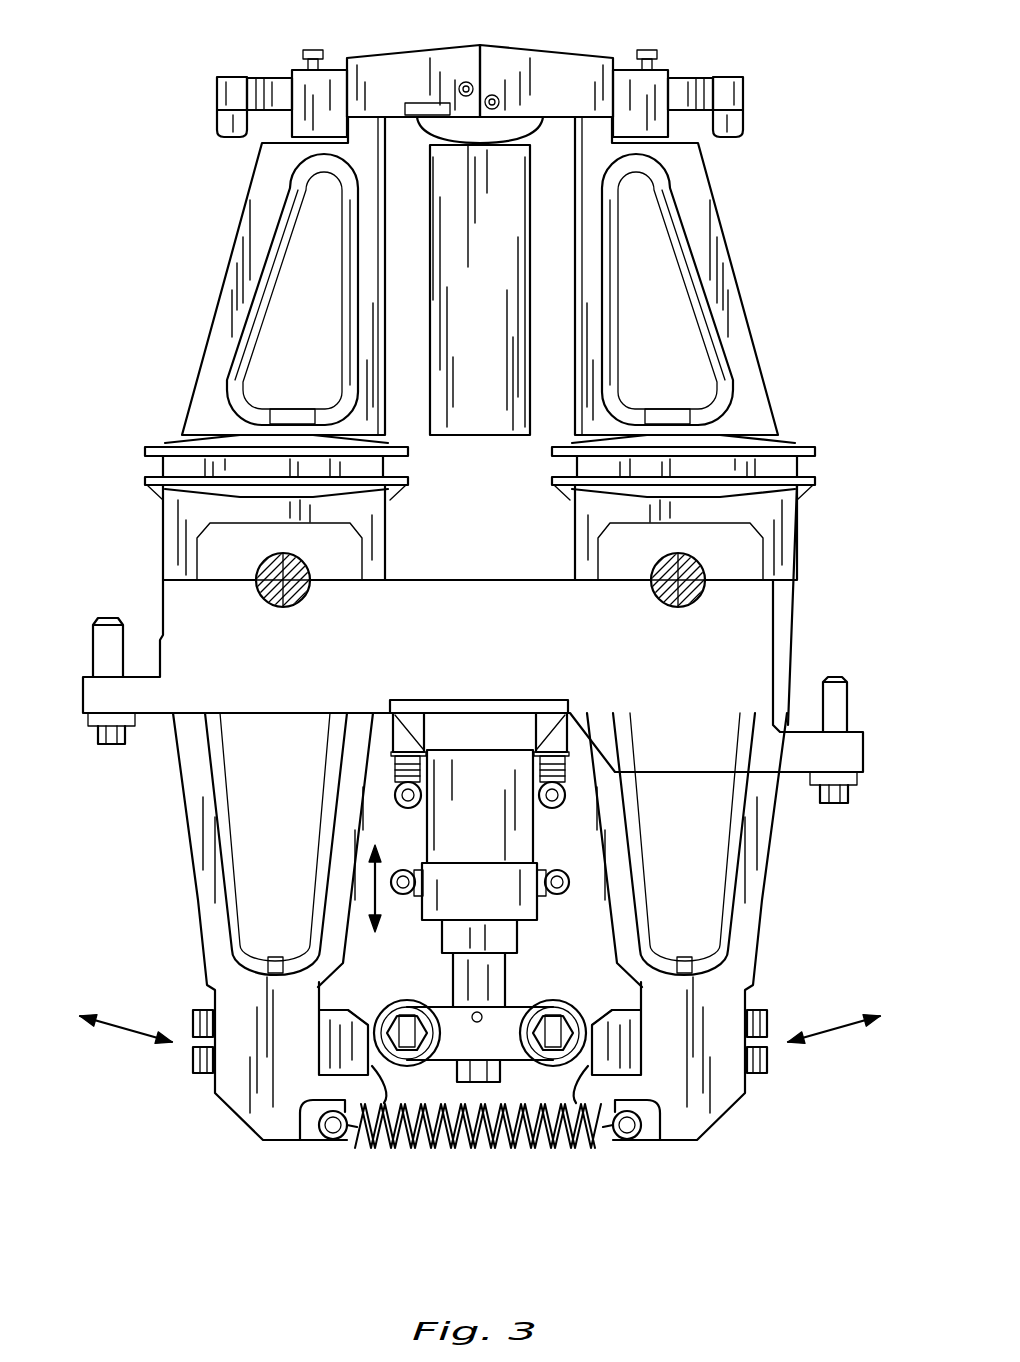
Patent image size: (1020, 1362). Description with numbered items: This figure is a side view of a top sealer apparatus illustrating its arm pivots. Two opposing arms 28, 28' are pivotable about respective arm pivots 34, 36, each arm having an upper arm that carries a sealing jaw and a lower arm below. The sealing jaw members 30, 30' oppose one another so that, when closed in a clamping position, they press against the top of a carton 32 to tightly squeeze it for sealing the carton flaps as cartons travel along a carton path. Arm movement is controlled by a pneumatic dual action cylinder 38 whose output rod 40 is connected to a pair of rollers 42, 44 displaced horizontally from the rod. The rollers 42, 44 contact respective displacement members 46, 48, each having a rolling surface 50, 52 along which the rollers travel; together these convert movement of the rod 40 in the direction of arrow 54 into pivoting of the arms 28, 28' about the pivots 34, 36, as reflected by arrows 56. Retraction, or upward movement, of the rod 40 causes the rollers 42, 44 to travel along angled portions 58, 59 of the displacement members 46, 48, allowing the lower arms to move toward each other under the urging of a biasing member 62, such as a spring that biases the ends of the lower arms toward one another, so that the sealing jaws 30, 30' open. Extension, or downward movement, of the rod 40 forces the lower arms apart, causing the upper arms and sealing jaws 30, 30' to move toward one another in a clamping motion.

The arm 28 is at (234, 348).
The arm 28' is at (720, 348).
The sealing jaw member 30 is at (348, 70).
The sealing jaw member 30' is at (611, 69).
The carton 32 is at (478, 293).
The arm pivot 34 is at (262, 560).
The arm pivot 36 is at (692, 593).
The pneumatic dual action cylinder 38 is at (481, 880).
The output rod 40 is at (487, 967).
The roller 42 is at (420, 1075).
The roller 44 is at (545, 1075).
The displacement member 46 is at (345, 1045).
The displacement member 48 is at (613, 1047).
The rolling surface 50 is at (373, 1095).
The rolling surface 52 is at (593, 1095).
The arrow 54 is at (370, 890).
The arrows 56 is at (132, 1027).
The angled portion 58 is at (350, 1010).
The angled portion 59 is at (592, 1040).
The biasing member 62 is at (483, 1145).